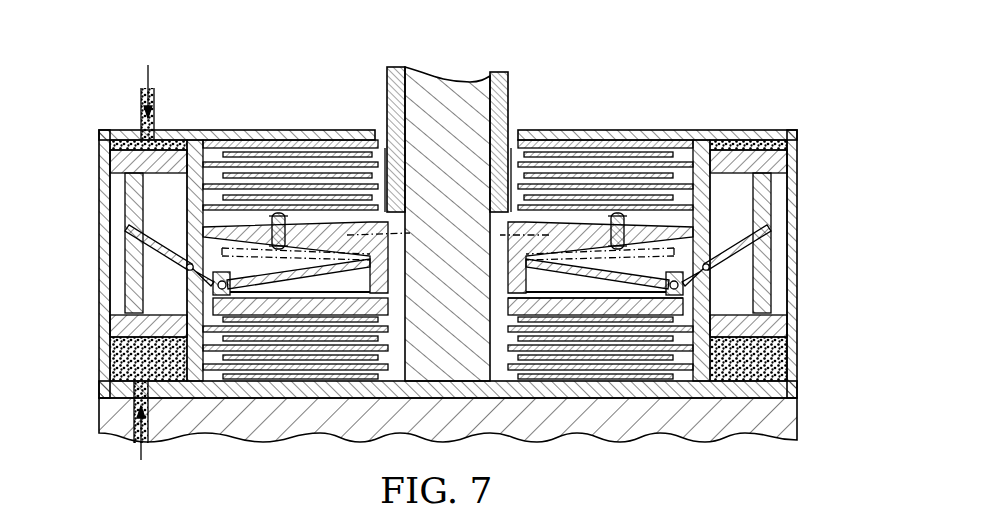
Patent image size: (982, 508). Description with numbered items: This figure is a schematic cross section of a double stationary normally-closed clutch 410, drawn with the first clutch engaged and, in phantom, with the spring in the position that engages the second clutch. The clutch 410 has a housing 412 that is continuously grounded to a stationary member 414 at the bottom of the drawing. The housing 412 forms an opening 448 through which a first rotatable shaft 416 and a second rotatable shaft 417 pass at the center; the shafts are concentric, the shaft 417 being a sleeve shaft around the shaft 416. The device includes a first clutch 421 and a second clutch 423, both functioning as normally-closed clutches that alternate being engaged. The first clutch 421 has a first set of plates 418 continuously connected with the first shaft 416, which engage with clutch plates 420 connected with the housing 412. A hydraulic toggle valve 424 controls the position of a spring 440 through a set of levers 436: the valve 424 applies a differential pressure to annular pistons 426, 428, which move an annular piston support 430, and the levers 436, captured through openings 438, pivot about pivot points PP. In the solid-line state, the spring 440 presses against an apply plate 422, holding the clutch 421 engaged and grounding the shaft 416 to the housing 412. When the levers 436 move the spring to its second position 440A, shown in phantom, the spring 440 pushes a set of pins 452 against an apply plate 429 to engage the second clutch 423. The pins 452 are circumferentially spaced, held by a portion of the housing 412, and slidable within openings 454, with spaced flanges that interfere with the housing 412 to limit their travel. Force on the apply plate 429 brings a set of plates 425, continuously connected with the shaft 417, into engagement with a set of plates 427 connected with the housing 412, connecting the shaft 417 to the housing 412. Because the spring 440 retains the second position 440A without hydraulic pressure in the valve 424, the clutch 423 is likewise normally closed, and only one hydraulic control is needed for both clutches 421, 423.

The double stationary normally-closed clutch 410 is at (703, 70).
The housing 412 is at (798, 254).
The stationary member 414 is at (677, 413).
The first rotatable shaft 416 is at (450, 72).
The second rotatable shaft 417 is at (511, 98).
The first set of plates 418 is at (398, 358).
The clutch plates 420 is at (213, 370).
The first clutch 421 is at (684, 355).
The apply plate 422 is at (592, 312).
The second clutch 423 is at (690, 152).
The hydraulic toggle valve 424 is at (104, 280).
The set of plates 425 is at (385, 150).
The piston 426 is at (140, 146).
The set of plates 427 is at (213, 160).
The piston 428 is at (147, 340).
The apply plate 429 is at (555, 212).
The piston support 430 is at (127, 190).
The levers 436 is at (122, 198).
The openings 438 is at (128, 236).
The spring 440 is at (263, 272).
The second position of spring 440A is at (410, 233).
The opening 448 is at (513, 130).
The pins 452 is at (296, 224).
The openings 454 is at (275, 215).
The pivot points PP is at (128, 249).